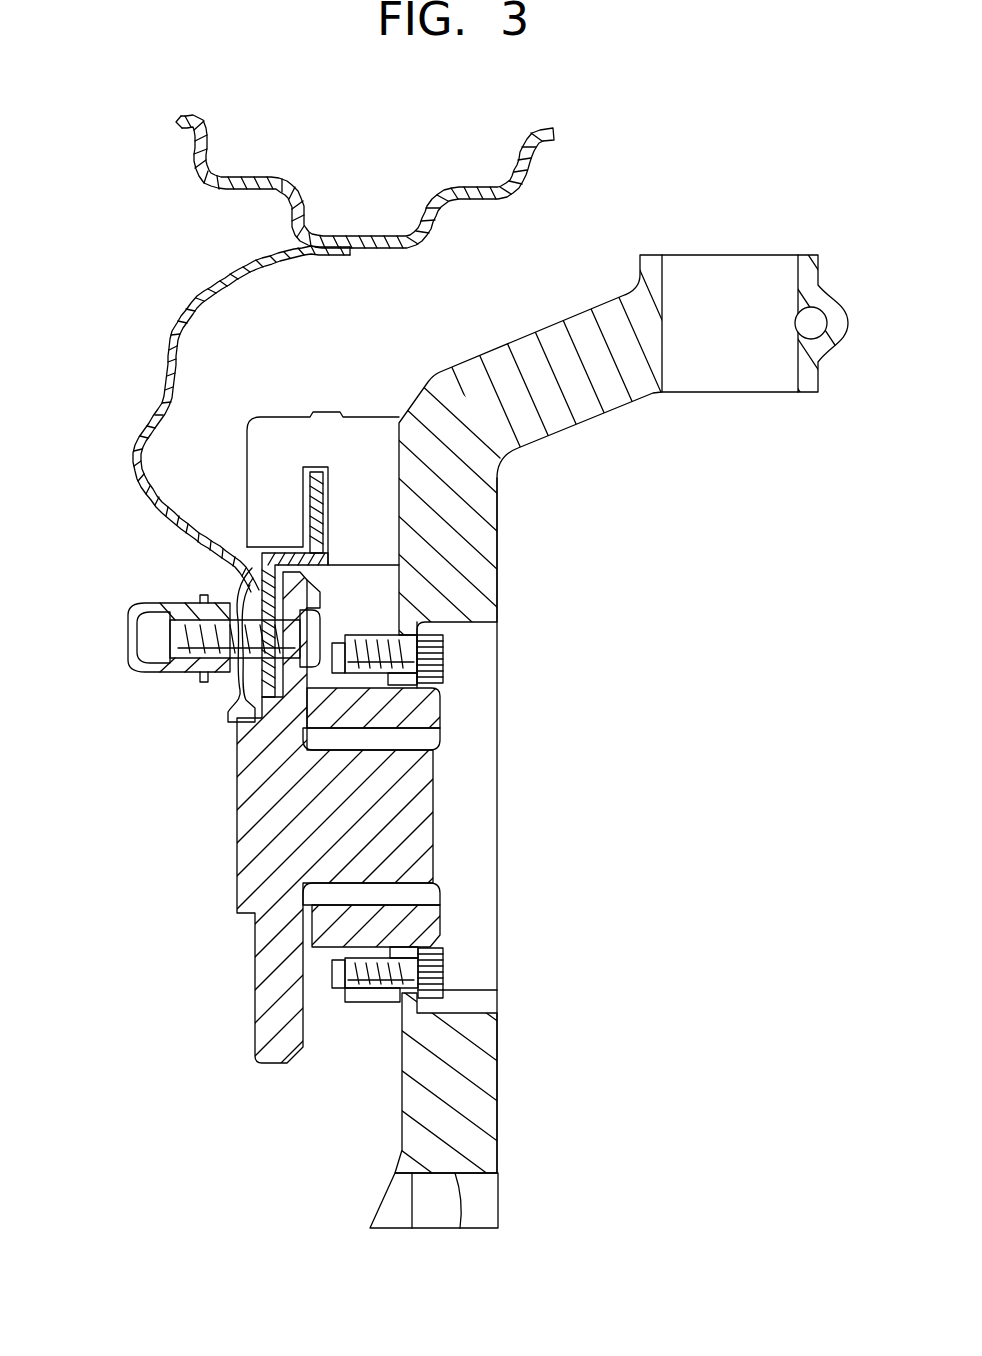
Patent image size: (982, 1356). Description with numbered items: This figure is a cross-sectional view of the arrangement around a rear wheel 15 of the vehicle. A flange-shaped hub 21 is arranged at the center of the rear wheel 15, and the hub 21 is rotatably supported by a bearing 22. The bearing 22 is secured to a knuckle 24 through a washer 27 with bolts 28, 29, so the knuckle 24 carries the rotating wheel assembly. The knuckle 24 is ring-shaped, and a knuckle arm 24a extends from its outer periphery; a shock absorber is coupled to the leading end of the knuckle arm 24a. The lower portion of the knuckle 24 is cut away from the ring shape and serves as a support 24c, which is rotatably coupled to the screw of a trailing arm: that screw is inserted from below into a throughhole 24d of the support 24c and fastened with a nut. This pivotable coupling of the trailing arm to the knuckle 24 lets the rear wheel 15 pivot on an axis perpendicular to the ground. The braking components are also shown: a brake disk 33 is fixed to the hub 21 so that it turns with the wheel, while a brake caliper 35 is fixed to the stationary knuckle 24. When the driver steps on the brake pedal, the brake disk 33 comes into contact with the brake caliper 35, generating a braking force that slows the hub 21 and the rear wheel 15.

The rear wheel 15 is at (170, 338).
The hub 21 is at (262, 973).
The bearing 22 is at (340, 718).
The knuckle 24 is at (569, 429).
The knuckle arm 24a is at (647, 252).
The support 24c is at (382, 1203).
The throughhole 24d is at (460, 1228).
The washer 27 is at (398, 992).
The bolt 28 is at (355, 642).
The bolt 29 is at (330, 968).
The brake disk 33 is at (245, 557).
The brake caliper 35 is at (295, 433).